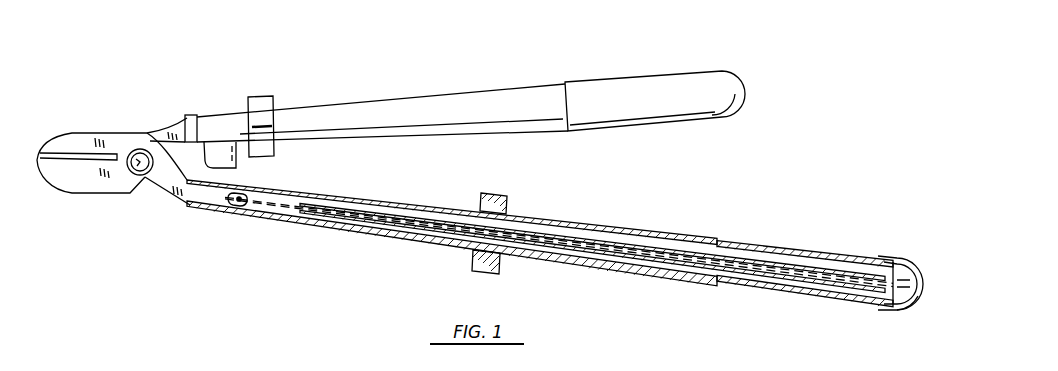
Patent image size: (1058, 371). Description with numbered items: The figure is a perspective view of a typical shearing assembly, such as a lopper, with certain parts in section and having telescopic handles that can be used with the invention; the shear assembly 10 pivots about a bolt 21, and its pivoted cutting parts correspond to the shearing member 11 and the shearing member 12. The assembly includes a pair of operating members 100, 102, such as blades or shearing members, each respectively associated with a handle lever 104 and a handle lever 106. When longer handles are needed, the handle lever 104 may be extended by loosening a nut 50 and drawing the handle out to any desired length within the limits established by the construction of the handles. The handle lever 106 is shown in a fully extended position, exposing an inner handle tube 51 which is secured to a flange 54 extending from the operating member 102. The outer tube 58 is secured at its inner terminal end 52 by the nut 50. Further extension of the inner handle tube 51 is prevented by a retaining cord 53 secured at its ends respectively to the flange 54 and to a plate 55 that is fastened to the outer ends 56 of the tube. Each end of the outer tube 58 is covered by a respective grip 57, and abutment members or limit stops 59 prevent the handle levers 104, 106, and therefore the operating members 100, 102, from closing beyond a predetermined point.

The shear assembly 10 is at (391, 55).
The shearing member 11 is at (82, 186).
The shearing member 12 is at (78, 131).
The bolt 21 is at (138, 149).
The operating member 100 is at (167, 125).
The operating member 102 is at (160, 200).
The handle lever 104 is at (466, 93).
The nut 50 is at (262, 98).
The inner handle tube 51 is at (398, 204).
The inner terminal end 52 is at (478, 256).
The retaining cord 53 is at (650, 264).
The flange 54 is at (232, 204).
The plate 55 is at (904, 302).
The outer ends of tube 56 is at (893, 261).
The grip 57 is at (722, 116).
The outer tube 58 is at (537, 84).
The limit stop 59 is at (237, 166).
The handle lever 106 is at (350, 230).